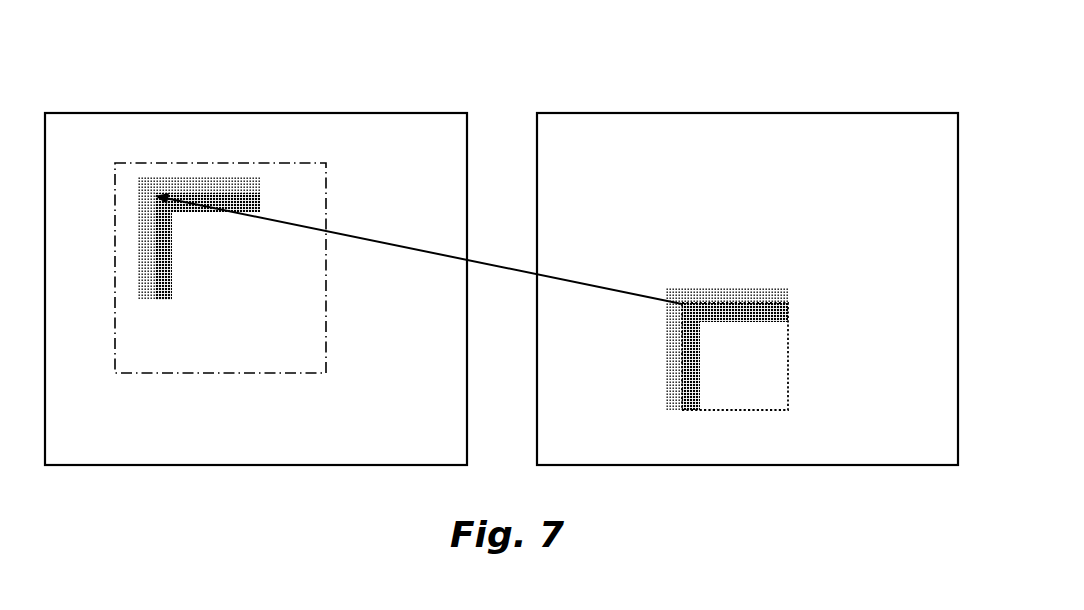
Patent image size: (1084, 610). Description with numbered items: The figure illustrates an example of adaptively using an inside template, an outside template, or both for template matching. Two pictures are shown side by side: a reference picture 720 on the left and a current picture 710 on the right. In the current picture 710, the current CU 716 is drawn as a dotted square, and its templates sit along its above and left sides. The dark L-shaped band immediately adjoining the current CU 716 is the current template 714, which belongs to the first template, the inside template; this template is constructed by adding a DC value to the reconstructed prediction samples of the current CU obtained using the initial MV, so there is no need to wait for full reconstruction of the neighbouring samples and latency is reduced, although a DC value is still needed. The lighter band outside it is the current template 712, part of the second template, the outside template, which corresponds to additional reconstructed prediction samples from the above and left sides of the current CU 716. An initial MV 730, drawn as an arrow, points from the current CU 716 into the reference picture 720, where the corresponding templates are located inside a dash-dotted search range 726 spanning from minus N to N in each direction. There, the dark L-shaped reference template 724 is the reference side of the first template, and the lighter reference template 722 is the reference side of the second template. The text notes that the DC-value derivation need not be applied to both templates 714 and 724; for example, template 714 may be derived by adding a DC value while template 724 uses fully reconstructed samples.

The current picture 710 is at (869, 113).
The reference picture 720 is at (377, 113).
The current template 712 is at (792, 295).
The current template 714 is at (792, 317).
The current CU 716 is at (788, 367).
The reference template 722 is at (262, 185).
The reference template 724 is at (262, 207).
The search range 726 is at (187, 163).
The initial motion vector 730 is at (480, 258).